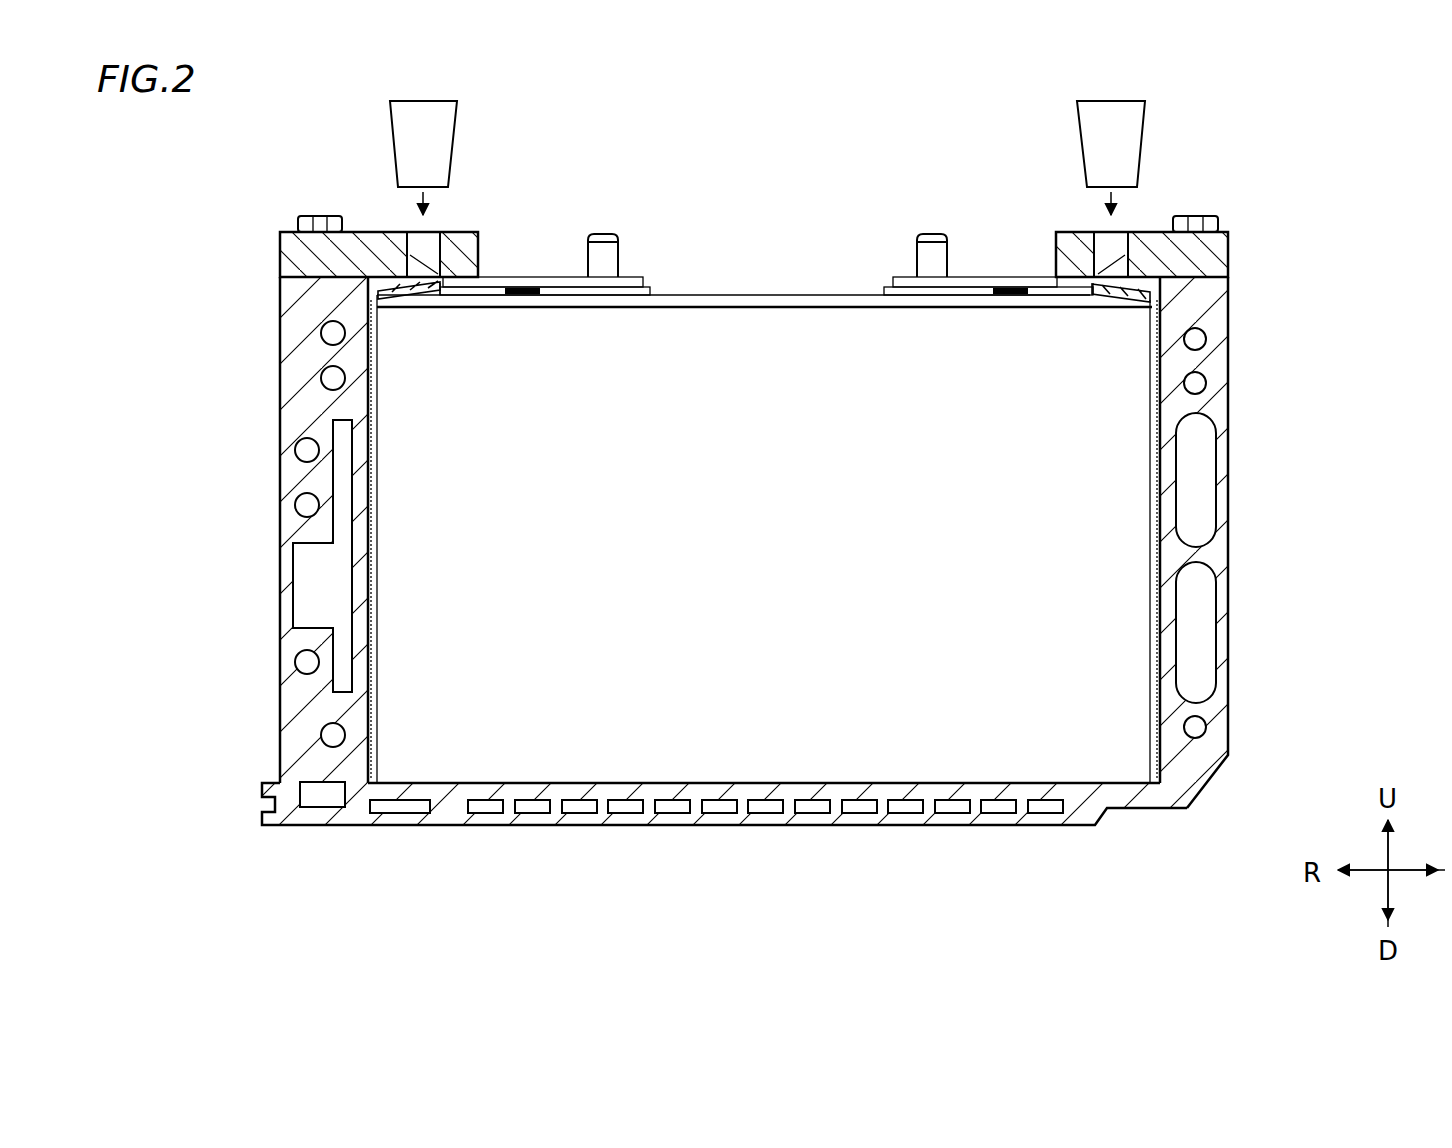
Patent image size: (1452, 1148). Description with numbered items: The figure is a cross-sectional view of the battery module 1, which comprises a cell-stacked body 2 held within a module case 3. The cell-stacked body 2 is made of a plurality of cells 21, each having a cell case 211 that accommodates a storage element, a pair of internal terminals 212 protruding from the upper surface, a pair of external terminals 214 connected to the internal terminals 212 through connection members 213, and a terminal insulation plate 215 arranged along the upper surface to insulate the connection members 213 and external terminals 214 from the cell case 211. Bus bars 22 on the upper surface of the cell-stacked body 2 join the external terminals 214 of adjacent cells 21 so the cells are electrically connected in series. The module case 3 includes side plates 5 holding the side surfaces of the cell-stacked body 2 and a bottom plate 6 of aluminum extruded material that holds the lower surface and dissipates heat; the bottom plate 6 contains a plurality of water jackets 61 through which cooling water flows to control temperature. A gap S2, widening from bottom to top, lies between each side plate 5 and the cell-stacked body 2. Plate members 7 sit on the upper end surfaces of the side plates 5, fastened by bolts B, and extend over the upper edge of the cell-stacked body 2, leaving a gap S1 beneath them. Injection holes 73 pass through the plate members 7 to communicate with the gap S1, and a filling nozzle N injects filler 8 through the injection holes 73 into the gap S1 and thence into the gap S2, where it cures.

The battery module 1 is at (1300, 130).
The cell-stacked body 2 is at (618, 655).
The cell 21 is at (763, 539).
The cell case 211 is at (707, 300).
The internal terminal 212 is at (520, 290).
The connection member 213 is at (490, 282).
The external terminal 214 is at (604, 234).
The terminal insulation plate 215 is at (770, 298).
The bus bar 22 is at (640, 278).
The module case 3 is at (1236, 644).
The side plate 5 is at (280, 505).
The bottom plate 6 is at (940, 826).
The water jacket 61 is at (768, 812).
The plate member 7 is at (280, 250).
The injection hole 73 is at (425, 258).
The filler 8 is at (748, 458).
The gap (first space) S1 is at (395, 282).
The gap (second space) S2 is at (368, 408).
The bolt B is at (300, 222).
The filling nozzle N is at (392, 150).